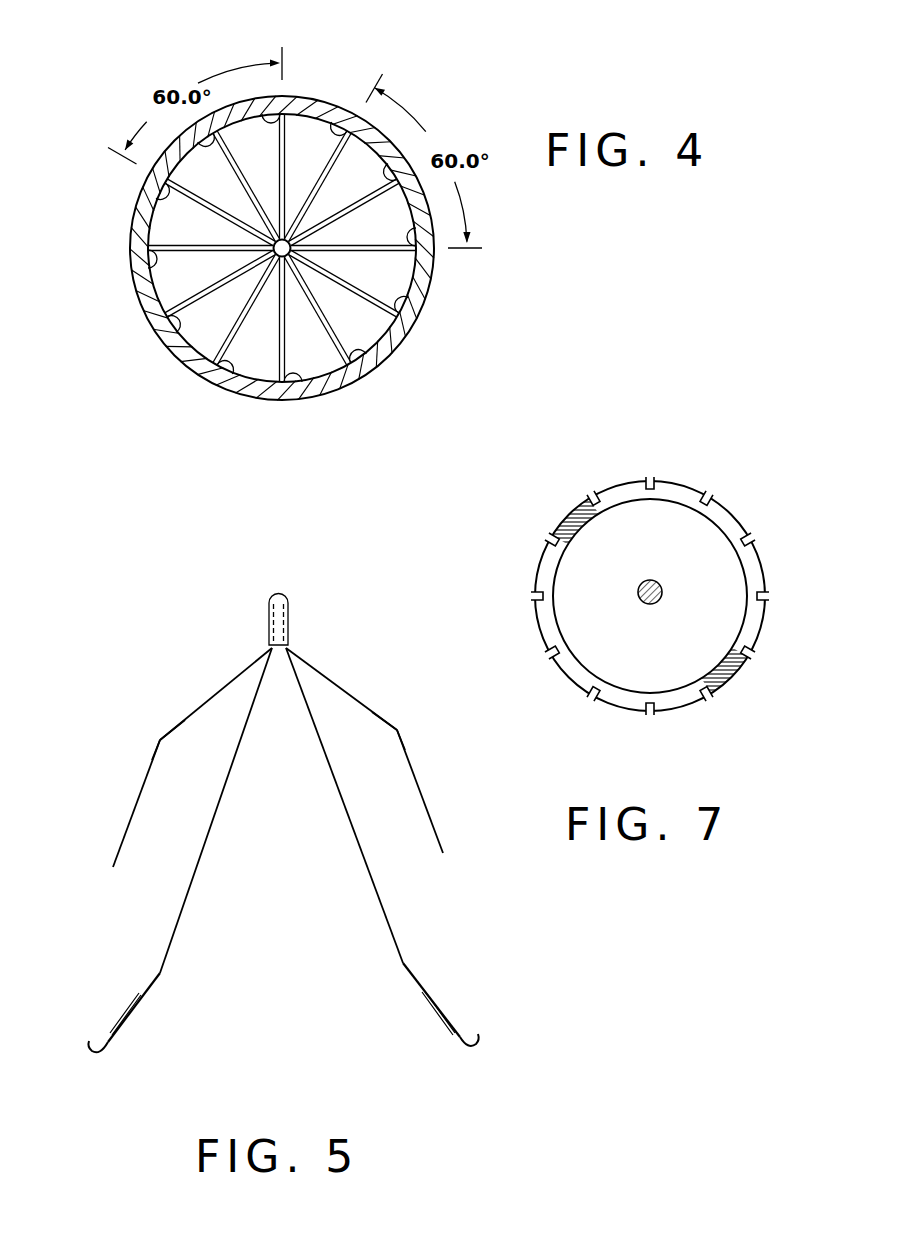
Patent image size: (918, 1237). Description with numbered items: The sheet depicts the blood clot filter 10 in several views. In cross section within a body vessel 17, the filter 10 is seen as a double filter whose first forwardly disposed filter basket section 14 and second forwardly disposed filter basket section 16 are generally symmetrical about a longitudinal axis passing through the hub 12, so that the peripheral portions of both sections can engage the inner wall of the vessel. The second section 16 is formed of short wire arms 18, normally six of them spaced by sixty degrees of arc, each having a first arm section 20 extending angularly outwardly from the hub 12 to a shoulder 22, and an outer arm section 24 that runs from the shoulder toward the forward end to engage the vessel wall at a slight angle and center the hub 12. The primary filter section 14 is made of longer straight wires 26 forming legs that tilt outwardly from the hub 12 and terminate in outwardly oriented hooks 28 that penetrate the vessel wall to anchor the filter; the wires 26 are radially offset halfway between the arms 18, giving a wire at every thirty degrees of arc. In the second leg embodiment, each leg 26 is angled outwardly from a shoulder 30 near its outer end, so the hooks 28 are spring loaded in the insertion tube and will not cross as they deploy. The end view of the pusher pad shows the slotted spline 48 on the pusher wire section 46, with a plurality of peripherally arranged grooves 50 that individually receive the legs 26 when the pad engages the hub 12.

In FIG. 5, the filter 10 is at (414, 712).
In FIG. 4, the hub 12 is at (291, 243).
In FIG. 5, the hub 12 is at (288, 620).
In FIG. 4, the first forwardly disposed filter basket section 14 is at (190, 265).
In FIG. 4, the second forwardly disposed filter basket section 16 is at (266, 354).
In FIG. 4, the body vessel 17 is at (390, 352).
In FIG. 4, the arms 18 is at (268, 117).
In FIG. 5, the arms 18 is at (205, 702).
In FIG. 5, the first arm section 20 is at (177, 727).
In FIG. 5, the shoulder 22 is at (160, 740).
In FIG. 5, the outer arm section 24 is at (131, 820).
In FIG. 4, the wires 26 is at (335, 130).
In FIG. 5, the wires 26 is at (178, 925).
In FIG. 5, the hooks 28 is at (102, 1053).
In FIG. 5, the shoulder 30 is at (161, 974).
In FIG. 7, the pusher wire section 46 is at (657, 604).
In FIG. 7, the slotted spline 48 is at (748, 496).
In FIG. 7, the grooves 50 is at (650, 484).